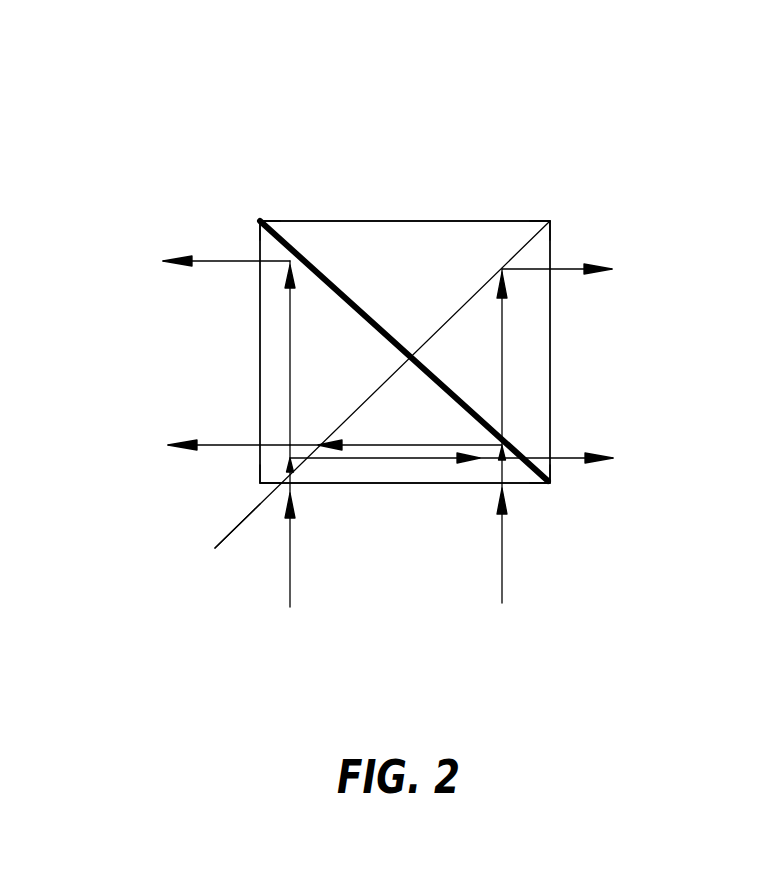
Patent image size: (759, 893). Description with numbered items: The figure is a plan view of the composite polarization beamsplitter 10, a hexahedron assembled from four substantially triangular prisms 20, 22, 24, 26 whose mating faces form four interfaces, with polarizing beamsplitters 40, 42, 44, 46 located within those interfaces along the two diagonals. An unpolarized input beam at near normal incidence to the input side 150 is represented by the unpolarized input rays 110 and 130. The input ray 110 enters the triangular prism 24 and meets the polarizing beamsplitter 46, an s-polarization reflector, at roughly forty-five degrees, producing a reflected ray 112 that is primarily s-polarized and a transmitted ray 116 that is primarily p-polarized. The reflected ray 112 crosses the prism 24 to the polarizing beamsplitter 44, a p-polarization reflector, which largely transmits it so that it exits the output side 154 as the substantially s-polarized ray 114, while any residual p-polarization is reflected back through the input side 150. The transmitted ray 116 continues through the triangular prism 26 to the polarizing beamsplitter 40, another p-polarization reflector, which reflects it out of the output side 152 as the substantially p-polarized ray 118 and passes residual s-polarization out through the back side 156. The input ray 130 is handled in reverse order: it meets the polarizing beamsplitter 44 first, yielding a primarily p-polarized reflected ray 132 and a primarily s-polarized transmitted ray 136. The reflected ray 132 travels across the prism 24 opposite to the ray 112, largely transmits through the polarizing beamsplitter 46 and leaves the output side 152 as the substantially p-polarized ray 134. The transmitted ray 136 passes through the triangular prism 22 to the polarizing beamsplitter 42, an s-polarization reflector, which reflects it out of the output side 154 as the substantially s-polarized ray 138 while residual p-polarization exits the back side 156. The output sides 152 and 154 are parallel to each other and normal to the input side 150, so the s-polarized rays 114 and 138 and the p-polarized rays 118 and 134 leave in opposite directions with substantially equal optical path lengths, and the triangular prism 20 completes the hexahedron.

The composite polarization beamsplitter 10 is at (432, 62).
The triangular prism 20 is at (477, 227).
The triangular prism 22 is at (540, 240).
The triangular prism 24 is at (217, 550).
The triangular prism 26 is at (273, 248).
The polarizing beamsplitter 40 is at (262, 221).
The polarizing beamsplitter 42 is at (537, 233).
The polarizing beamsplitter 44 is at (552, 470).
The polarizing beamsplitter 46 is at (248, 465).
The unpolarized input ray 110 is at (297, 568).
The reflected ray 112 is at (365, 460).
The s-polarized ray 114 is at (558, 456).
The transmitted ray 116 is at (290, 364).
The p-polarized ray 118 is at (220, 267).
The unpolarized input ray 130 is at (513, 592).
The reflected ray 132 is at (412, 447).
The p-polarized ray 134 is at (207, 443).
The transmitted ray 136 is at (513, 353).
The s-polarized ray 138 is at (565, 270).
The input side 150 is at (395, 483).
The output side 152 is at (260, 313).
The output side 154 is at (553, 247).
The back side 156 is at (393, 220).